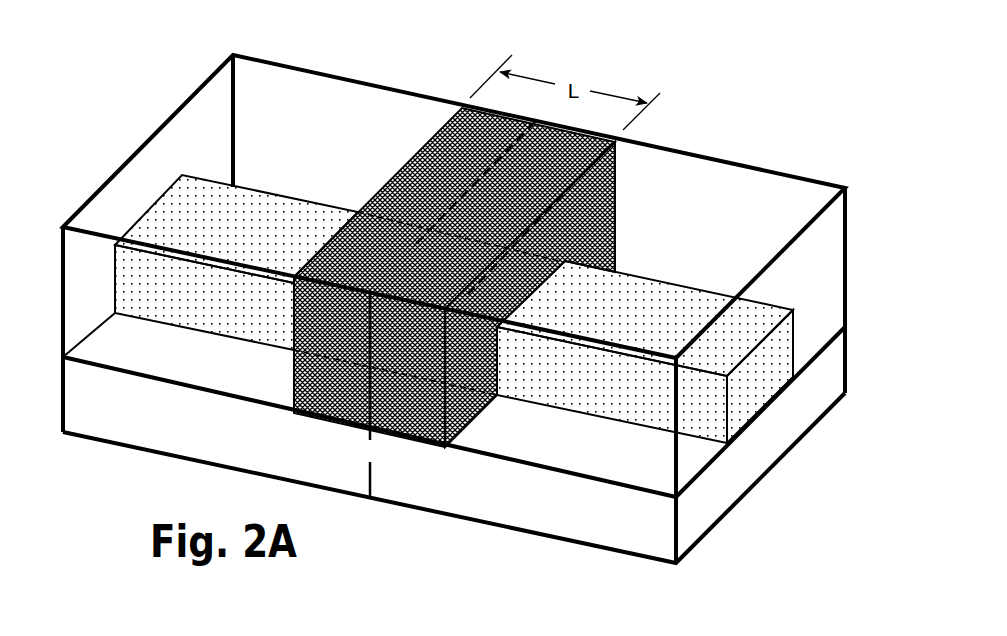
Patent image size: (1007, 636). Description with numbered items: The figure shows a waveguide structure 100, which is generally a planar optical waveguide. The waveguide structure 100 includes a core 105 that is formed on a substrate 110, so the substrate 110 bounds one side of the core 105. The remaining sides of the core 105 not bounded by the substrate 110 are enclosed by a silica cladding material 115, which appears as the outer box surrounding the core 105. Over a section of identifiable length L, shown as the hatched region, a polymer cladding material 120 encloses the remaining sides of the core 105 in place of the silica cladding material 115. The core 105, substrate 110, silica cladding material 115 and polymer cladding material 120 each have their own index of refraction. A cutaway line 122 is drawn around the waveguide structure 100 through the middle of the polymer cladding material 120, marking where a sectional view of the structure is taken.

The waveguide structure 100 is at (459, 286).
The core 105 is at (540, 363).
The substrate 110 is at (763, 442).
The silica cladding material 115 is at (343, 150).
The polymer cladding material 120 is at (293, 417).
The cutaway line 122 is at (376, 463).